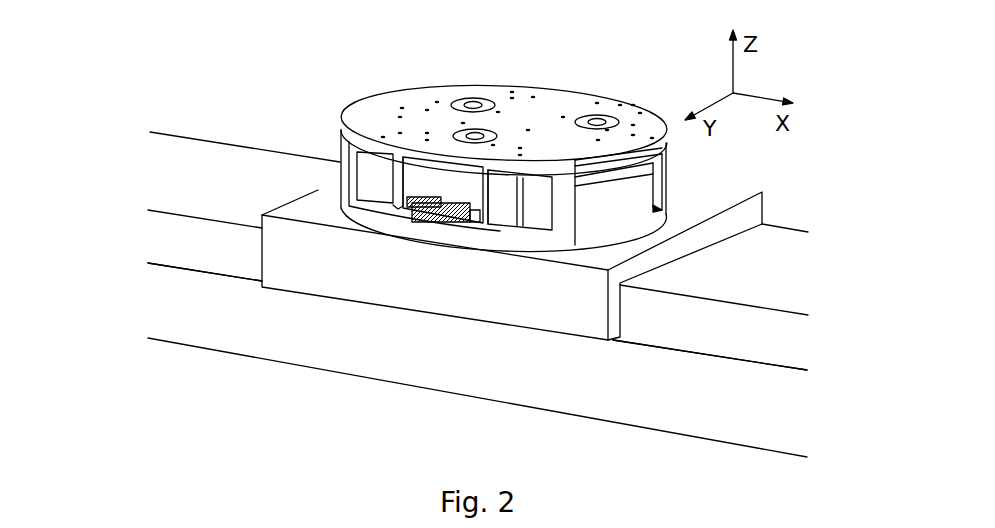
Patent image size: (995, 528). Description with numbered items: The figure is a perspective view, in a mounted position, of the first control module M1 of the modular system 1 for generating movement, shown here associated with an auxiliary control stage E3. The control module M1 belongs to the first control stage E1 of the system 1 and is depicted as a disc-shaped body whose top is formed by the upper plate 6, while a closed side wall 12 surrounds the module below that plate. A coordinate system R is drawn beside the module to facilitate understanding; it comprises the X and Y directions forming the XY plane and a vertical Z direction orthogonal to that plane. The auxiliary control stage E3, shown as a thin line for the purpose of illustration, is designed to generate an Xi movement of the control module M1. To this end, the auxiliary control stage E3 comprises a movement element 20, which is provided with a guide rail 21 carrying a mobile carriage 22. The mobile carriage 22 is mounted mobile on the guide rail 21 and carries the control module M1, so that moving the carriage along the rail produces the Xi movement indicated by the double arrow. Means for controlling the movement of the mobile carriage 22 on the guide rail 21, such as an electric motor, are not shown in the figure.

The system 1 is at (173, 242).
The upper plate 6 is at (667, 145).
The closed side wall 12 is at (608, 218).
The movement element 20 is at (636, 368).
The guide rail 21 is at (730, 320).
The mobile carriage 22 is at (693, 238).
The control stage E1 is at (325, 137).
The auxiliary control stage E3 is at (157, 188).
The control module M1 is at (660, 93).
The coordinate system R is at (785, 75).
The Xi movement Xi is at (798, 200).